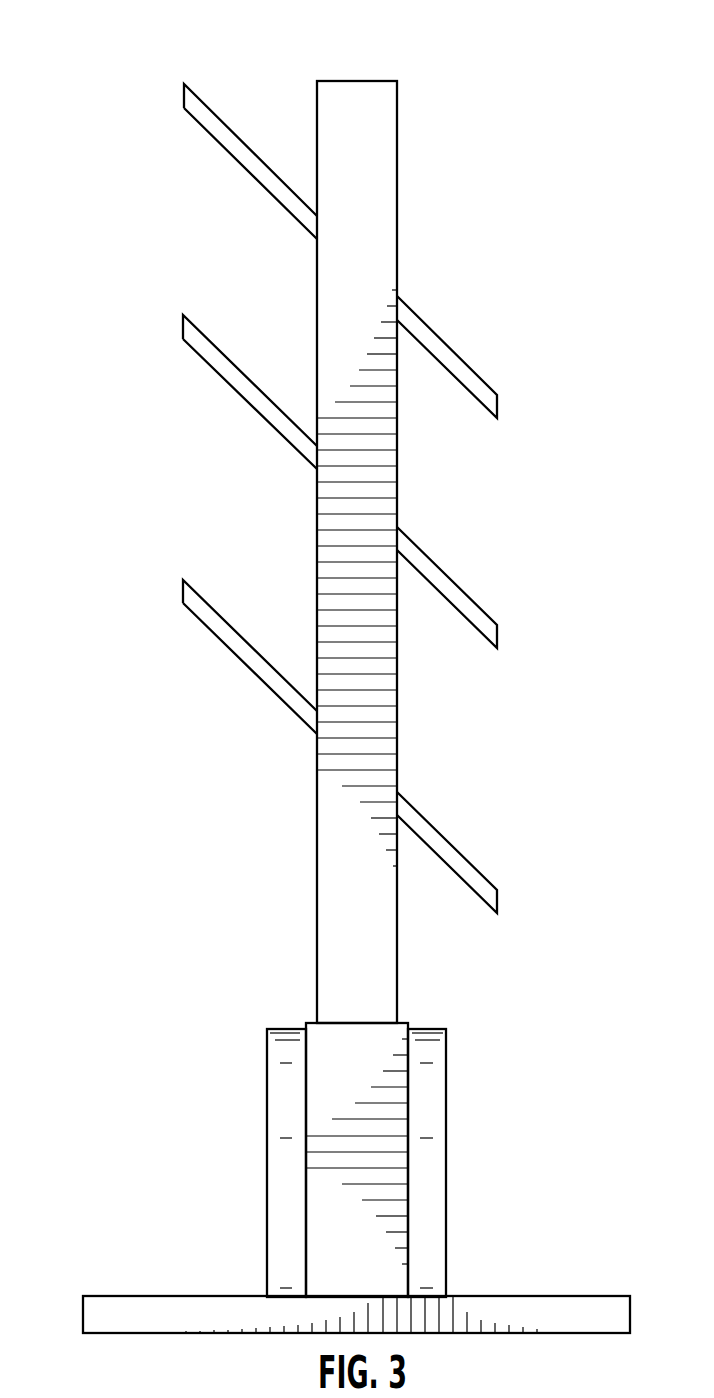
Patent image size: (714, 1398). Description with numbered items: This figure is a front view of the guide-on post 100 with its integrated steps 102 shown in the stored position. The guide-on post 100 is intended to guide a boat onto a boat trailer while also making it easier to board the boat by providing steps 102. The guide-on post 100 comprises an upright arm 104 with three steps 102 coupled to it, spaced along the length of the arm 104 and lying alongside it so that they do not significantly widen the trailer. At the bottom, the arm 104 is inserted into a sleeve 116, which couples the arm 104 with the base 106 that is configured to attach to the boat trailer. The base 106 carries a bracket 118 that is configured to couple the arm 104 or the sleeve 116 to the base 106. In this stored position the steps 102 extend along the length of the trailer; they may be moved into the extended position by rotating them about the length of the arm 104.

The guide-on post 100 is at (84, 108).
The steps 102 is at (493, 405).
The arm 104 is at (367, 277).
The base 106 is at (545, 1310).
The sleeve 116 is at (320, 1058).
The bracket 118 is at (425, 1109).